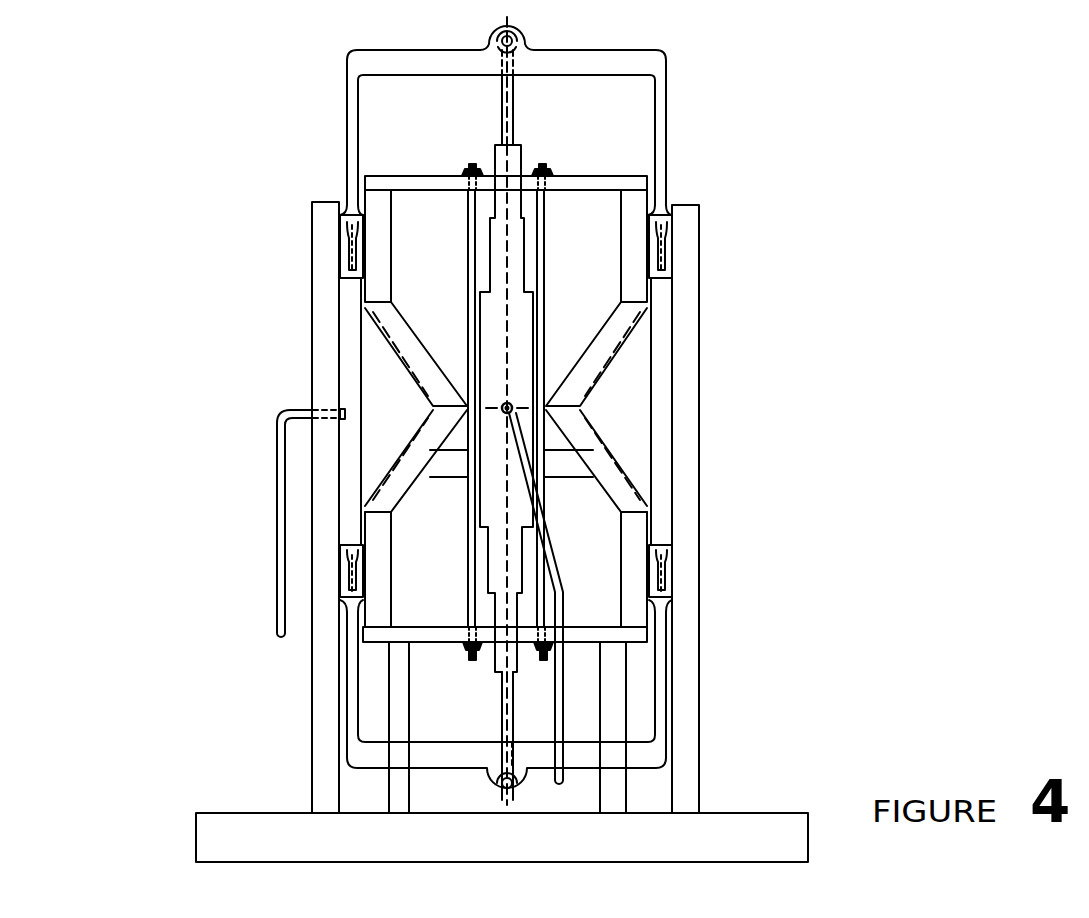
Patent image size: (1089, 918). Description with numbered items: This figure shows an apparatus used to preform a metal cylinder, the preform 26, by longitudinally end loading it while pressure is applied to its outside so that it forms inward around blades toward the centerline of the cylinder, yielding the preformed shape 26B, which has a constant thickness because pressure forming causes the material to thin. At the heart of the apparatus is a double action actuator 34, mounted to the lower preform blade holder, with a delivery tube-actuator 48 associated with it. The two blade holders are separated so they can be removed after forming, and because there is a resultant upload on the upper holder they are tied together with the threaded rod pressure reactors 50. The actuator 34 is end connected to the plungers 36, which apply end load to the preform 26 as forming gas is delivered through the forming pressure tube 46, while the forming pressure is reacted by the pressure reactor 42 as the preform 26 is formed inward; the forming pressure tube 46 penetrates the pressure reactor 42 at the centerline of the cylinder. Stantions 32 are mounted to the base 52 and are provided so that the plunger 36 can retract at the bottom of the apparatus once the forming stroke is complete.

The preform 26 is at (653, 375).
The preformed shape 26B is at (615, 458).
The stantion 32 is at (412, 685).
The double action actuator 34 is at (513, 102).
The plunger 36 is at (668, 102).
The pressure reactor 42 is at (702, 233).
The forming pressure tube 46 is at (277, 500).
The delivery tube-actuator 48 is at (500, 710).
The threaded rod pressure reactors 50 is at (468, 255).
The base 52 is at (490, 809).